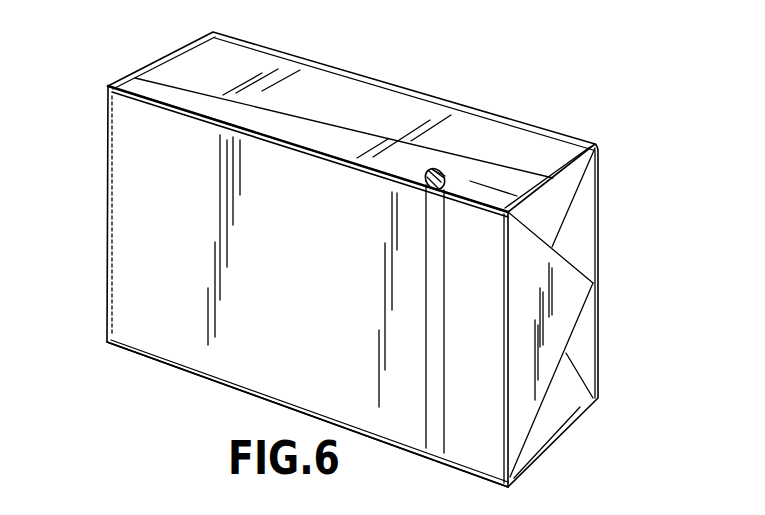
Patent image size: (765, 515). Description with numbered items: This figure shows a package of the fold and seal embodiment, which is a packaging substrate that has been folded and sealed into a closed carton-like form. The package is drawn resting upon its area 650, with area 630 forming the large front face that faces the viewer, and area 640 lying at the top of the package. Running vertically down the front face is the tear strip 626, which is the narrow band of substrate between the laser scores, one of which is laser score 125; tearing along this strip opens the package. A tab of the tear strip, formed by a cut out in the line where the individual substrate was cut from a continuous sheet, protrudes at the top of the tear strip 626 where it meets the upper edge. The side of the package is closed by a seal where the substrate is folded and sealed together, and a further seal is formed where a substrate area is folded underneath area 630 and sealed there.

The area 640 is at (350, 92).
The tear strip 626 is at (440, 192).
The laser score 125 is at (442, 353).
The area 630 is at (133, 243).
The area 650 is at (194, 374).